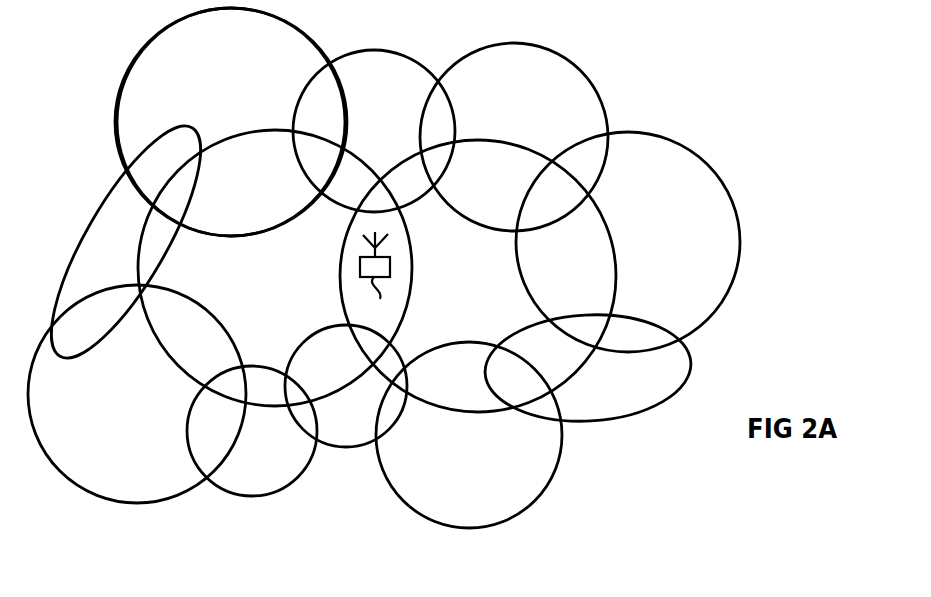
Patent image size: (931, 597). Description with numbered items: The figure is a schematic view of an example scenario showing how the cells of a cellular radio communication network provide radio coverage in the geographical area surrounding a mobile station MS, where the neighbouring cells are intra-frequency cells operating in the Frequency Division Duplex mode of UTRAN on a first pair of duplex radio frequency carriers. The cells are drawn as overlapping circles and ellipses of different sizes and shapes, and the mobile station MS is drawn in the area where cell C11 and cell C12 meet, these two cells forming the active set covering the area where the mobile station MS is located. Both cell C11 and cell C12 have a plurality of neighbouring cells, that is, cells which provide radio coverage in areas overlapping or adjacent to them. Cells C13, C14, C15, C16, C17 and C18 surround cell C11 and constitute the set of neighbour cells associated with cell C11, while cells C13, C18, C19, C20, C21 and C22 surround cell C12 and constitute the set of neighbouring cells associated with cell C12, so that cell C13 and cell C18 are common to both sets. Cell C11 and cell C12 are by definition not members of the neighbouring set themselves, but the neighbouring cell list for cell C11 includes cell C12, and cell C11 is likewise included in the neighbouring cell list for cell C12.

The cell C11 is at (275, 268).
The cell C12 is at (478, 276).
The cell C13 is at (374, 131).
The cell C14 is at (231, 122).
The cell C15 is at (125, 242).
The cell C16 is at (137, 394).
The cell C17 is at (252, 431).
The cell C18 is at (346, 386).
The cell C19 is at (469, 435).
The cell C20 is at (587, 368).
The cell C21 is at (628, 242).
The cell C22 is at (514, 137).
The mobile station MS is at (374, 277).